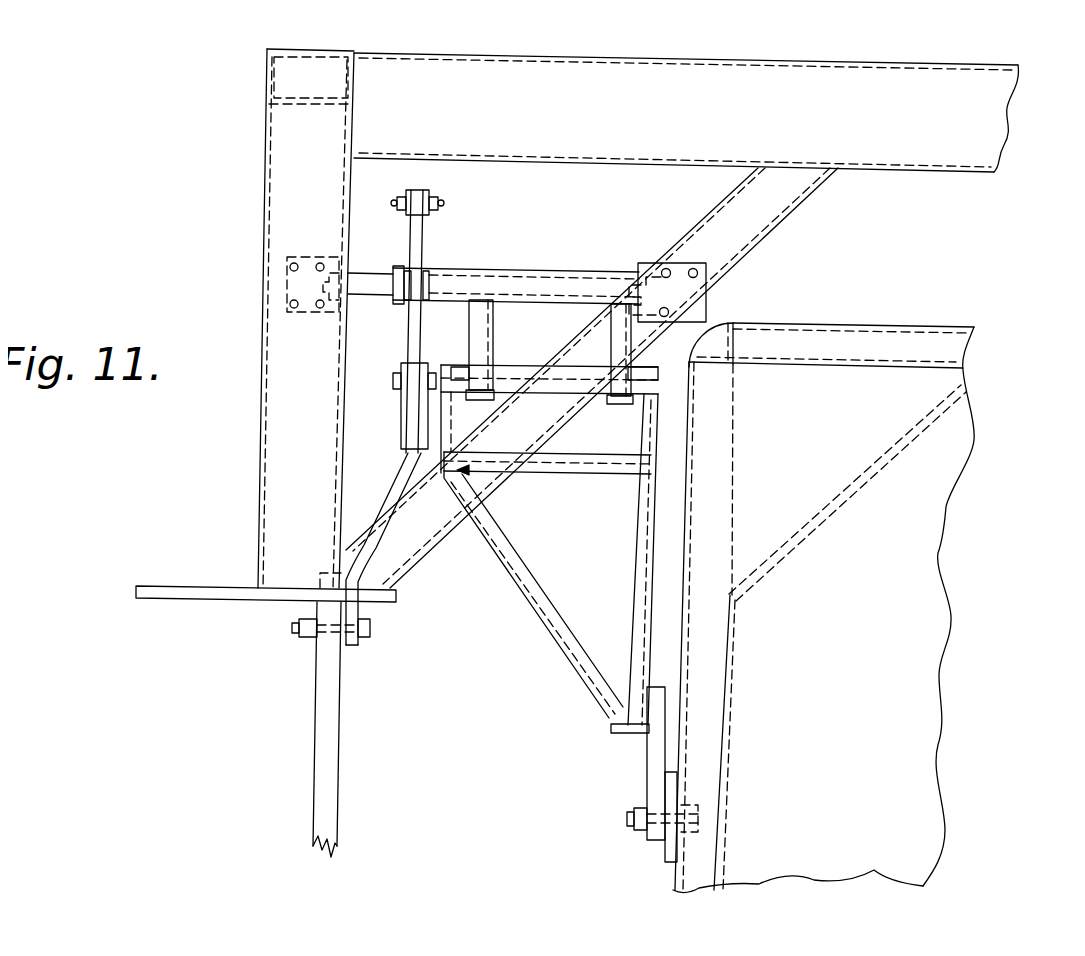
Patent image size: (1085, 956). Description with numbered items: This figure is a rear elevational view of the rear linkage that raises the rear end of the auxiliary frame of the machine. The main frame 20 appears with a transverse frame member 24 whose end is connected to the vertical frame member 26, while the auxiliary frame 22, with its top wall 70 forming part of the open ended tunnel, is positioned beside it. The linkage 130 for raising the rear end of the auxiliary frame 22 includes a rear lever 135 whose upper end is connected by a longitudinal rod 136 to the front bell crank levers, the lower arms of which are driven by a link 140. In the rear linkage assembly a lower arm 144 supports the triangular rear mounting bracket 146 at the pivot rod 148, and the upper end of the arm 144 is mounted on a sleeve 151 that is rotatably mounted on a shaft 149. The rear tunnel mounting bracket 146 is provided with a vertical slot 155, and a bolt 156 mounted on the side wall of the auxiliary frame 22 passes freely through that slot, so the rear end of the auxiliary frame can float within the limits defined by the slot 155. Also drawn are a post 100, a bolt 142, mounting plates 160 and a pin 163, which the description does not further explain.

The main frame 20 is at (267, 82).
The auxiliary frame 22 is at (834, 565).
The transverse frame member 24 is at (913, 150).
The vertical frame member 26 is at (268, 403).
The top wall 70 is at (932, 343).
The post 100 is at (312, 680).
The linkage 130 is at (502, 244).
The rear lever 135 is at (416, 242).
The longitudinal rod 136 is at (430, 193).
The link 140 is at (390, 483).
The bolt 142 is at (293, 628).
The lower arm 144 is at (538, 333).
The triangular rear mounting bracket 146 is at (562, 647).
The pivot rod 148 is at (566, 398).
The shaft 149 is at (708, 268).
The sleeve 151 is at (582, 266).
The slot 155 is at (658, 757).
The bolt 156 is at (634, 813).
The mounting plate 160 is at (283, 266).
The pin 163 is at (396, 203).